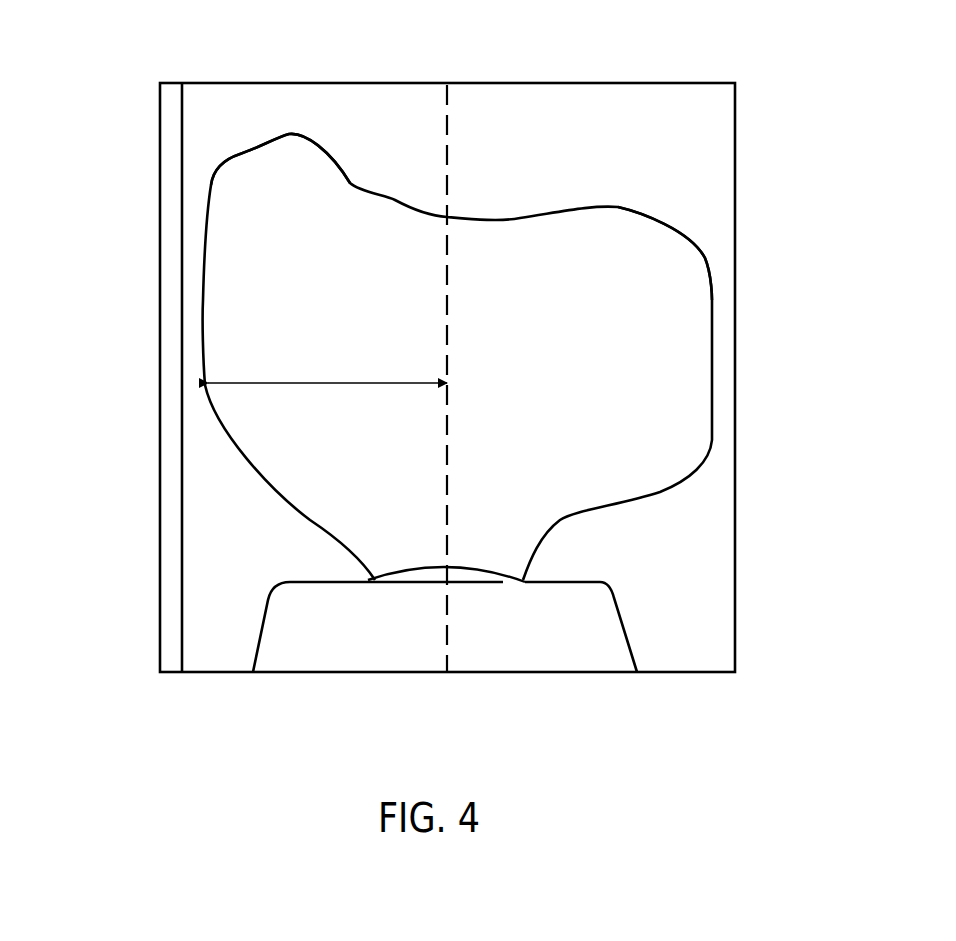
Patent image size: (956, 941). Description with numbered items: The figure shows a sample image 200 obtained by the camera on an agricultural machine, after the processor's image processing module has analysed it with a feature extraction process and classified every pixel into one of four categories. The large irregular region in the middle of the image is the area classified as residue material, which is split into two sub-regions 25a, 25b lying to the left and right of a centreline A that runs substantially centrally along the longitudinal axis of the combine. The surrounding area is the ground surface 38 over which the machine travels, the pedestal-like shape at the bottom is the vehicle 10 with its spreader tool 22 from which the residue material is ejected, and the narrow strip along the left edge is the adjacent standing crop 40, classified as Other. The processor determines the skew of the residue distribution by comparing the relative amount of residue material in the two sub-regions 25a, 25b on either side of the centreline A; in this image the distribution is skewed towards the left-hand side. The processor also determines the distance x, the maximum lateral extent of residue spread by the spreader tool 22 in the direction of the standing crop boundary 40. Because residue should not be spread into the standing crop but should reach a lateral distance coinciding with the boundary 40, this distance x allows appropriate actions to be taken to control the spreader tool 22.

The vehicle 10 is at (620, 672).
The spreader tool 22 is at (393, 582).
The first sub-region of residue material 25a is at (262, 185).
The second sub-region of residue material 25b is at (683, 275).
The ground surface 38 is at (735, 625).
The adjacent standing crop 40 is at (160, 449).
The sample image 200 is at (760, 381).
The centreline A is at (447, 101).
The distance x is at (327, 372).